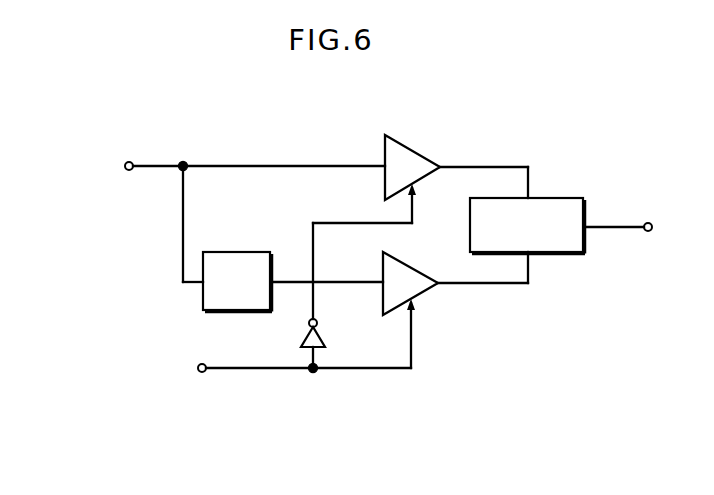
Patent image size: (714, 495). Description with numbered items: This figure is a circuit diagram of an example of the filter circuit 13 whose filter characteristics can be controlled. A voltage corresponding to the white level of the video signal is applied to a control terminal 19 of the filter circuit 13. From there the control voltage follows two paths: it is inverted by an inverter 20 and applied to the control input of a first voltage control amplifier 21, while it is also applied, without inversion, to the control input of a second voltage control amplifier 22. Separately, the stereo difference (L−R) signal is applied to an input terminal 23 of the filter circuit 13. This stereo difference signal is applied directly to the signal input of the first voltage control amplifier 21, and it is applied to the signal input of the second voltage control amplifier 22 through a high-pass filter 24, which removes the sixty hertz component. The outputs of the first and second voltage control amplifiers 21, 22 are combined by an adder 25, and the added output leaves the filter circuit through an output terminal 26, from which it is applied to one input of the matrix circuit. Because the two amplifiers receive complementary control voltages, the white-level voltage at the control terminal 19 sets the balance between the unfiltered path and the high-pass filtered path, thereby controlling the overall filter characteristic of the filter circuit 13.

The filter circuit 13 is at (402, 372).
The control terminal 19 is at (203, 374).
The inverter 20 is at (320, 334).
The first voltage control amplifier 21 is at (413, 148).
The second voltage control amplifier 22 is at (426, 294).
The input terminal 23 is at (128, 171).
The high-pass filter 24 is at (203, 298).
The adder 25 is at (574, 255).
The output terminal 26 is at (648, 232).